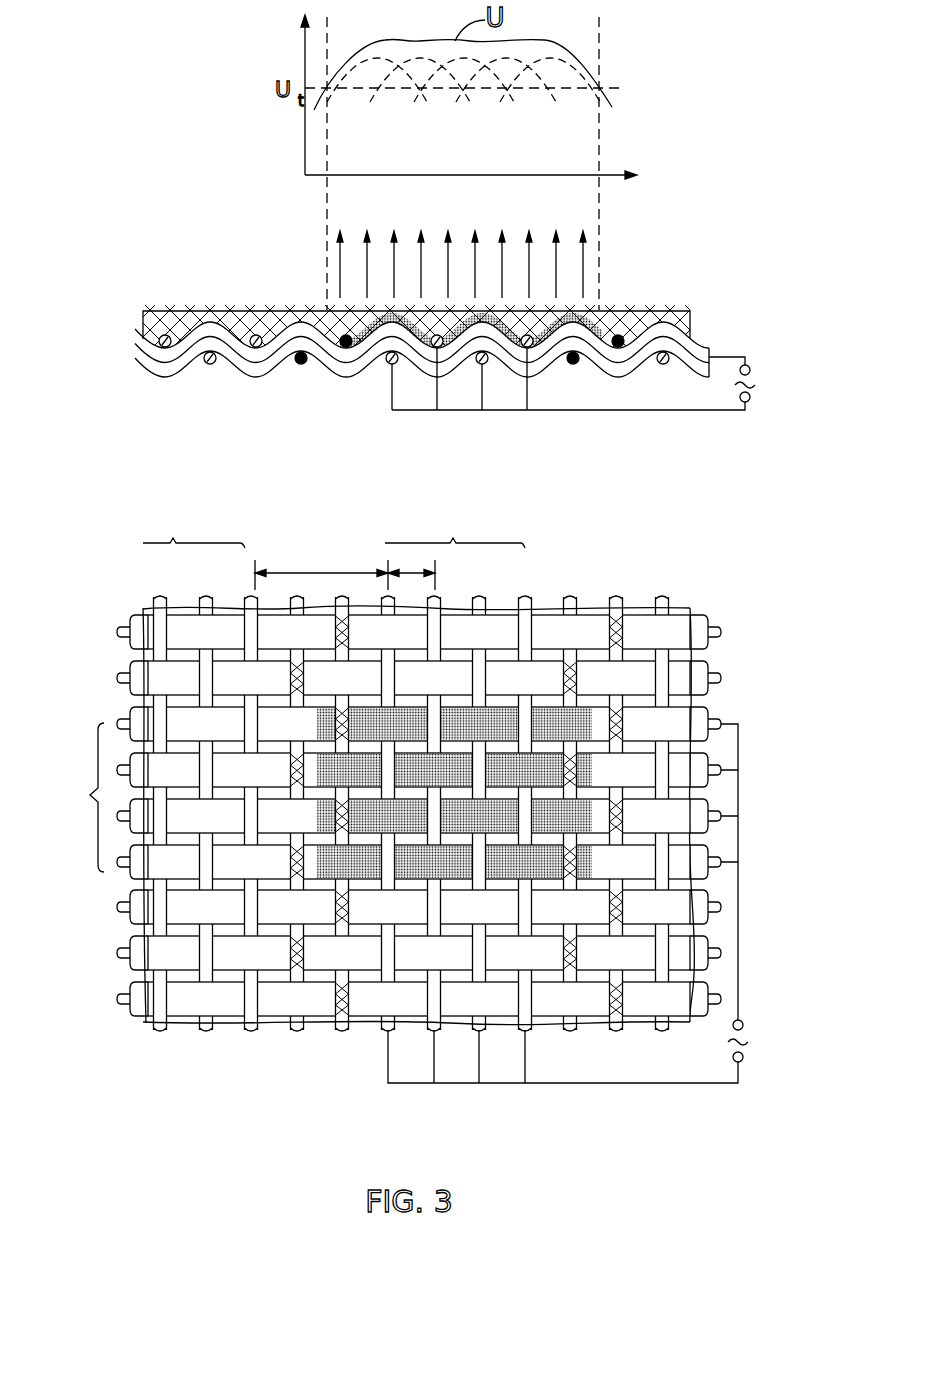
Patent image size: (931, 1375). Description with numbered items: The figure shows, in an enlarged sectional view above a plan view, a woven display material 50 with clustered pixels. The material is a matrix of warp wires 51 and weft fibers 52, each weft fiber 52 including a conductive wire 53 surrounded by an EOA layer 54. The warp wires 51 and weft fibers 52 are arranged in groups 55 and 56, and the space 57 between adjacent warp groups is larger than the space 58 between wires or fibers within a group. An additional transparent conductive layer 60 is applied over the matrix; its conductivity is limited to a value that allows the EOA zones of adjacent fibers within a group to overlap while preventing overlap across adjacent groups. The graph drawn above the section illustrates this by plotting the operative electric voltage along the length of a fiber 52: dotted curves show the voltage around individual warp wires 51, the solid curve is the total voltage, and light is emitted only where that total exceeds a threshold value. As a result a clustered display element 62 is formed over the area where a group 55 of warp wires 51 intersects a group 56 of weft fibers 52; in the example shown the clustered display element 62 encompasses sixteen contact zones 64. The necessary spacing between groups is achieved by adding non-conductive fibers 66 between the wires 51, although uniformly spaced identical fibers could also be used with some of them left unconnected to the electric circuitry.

The woven display material 50 is at (781, 730).
The warp wires 51 is at (256, 348).
The weft fibers 52 is at (718, 330).
The conductive wire 53 is at (128, 340).
The EOA layer 54 is at (128, 352).
The warp group 55 is at (173, 538).
The weft group 56 is at (76, 797).
The space between adjacent warp groups 57 is at (320, 573).
The space between wires within a group 58 is at (437, 570).
The additional transparent conductive layer 60 is at (185, 325).
The clustered display element 62 is at (442, 781).
The contact zones 64 is at (517, 747).
The non-conductive fibers 66 is at (346, 348).